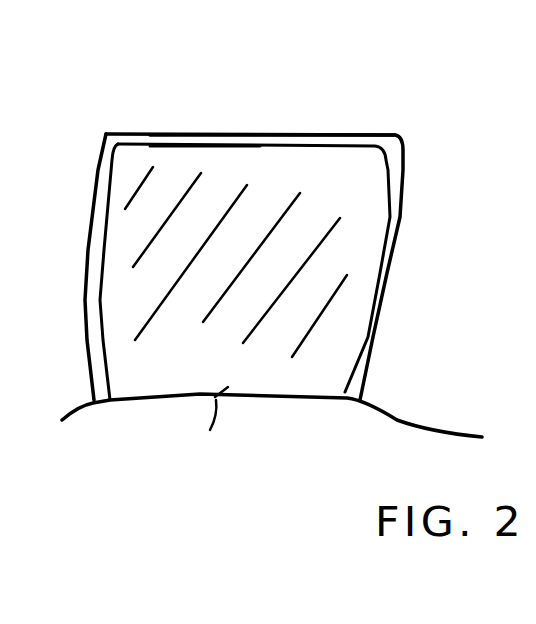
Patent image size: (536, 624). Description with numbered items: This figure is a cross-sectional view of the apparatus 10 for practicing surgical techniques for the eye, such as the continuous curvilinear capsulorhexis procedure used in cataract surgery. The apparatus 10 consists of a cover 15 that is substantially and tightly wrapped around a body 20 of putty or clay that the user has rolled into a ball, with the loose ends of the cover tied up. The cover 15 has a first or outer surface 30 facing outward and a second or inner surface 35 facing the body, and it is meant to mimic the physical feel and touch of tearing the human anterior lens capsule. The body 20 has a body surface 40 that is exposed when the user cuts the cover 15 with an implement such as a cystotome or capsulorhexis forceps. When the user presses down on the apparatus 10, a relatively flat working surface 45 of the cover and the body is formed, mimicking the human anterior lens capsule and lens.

The apparatus 10 is at (432, 73).
The cover 15 is at (398, 212).
The body 20 is at (363, 285).
The outer surface 30 is at (377, 340).
The inner surface 35 is at (100, 360).
The body surface 40 is at (288, 142).
The working surface 45 is at (212, 114).